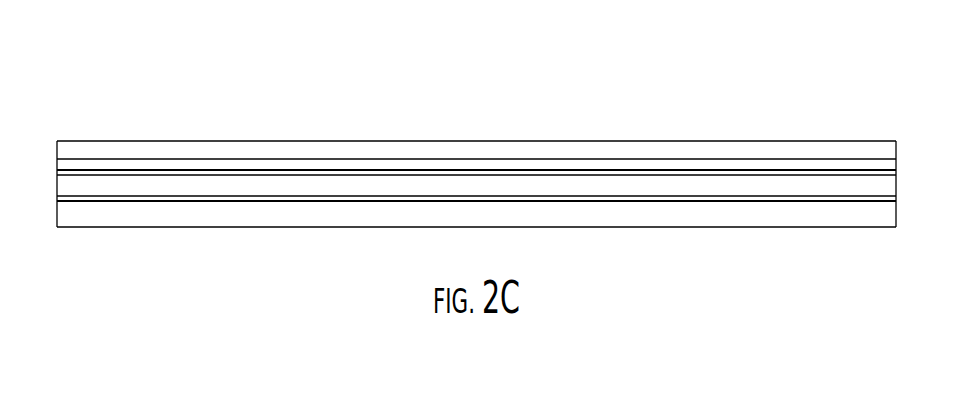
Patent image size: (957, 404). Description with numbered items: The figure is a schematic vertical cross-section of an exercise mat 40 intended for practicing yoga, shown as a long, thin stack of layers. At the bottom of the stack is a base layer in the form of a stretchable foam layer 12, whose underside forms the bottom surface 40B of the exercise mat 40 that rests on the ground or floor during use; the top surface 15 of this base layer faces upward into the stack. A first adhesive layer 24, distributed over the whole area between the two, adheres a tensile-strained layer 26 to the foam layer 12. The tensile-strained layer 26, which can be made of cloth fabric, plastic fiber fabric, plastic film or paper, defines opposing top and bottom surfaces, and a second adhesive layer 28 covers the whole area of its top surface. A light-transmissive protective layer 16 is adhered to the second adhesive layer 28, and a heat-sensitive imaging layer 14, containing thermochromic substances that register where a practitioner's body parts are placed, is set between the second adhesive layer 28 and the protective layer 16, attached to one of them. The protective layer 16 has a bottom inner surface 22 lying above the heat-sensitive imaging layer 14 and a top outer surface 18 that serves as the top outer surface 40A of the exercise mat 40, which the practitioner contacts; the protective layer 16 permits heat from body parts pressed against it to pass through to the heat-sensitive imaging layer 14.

The exercise mat 40 is at (191, 38).
The top outer surface 40A is at (655, 141).
The bottom surface 40B is at (665, 227).
The stretchable foam layer 12 is at (318, 215).
The heat-sensitive imaging layer 14 is at (262, 160).
The top surface 15 is at (212, 199).
The light-transmissive protective layer 16 is at (381, 148).
The top outer surface 18 is at (518, 141).
The bottom inner surface 22 is at (523, 160).
The first adhesive layer 24 is at (55, 198).
The tensile-strained layer 26 is at (409, 183).
The second adhesive layer 28 is at (63, 156).